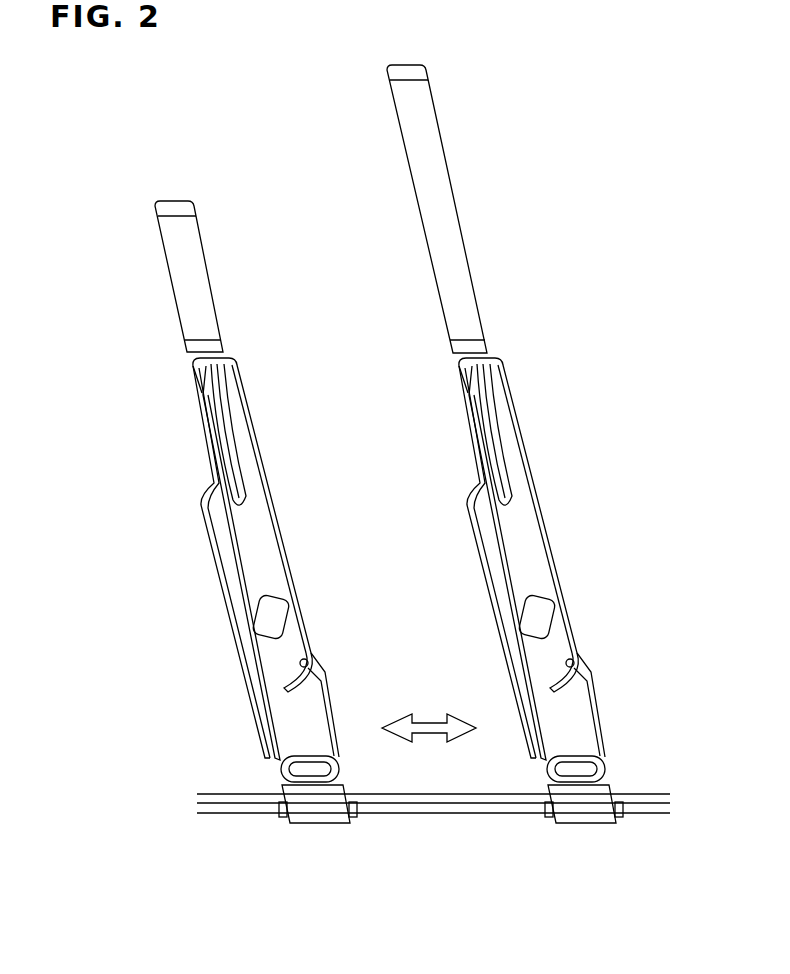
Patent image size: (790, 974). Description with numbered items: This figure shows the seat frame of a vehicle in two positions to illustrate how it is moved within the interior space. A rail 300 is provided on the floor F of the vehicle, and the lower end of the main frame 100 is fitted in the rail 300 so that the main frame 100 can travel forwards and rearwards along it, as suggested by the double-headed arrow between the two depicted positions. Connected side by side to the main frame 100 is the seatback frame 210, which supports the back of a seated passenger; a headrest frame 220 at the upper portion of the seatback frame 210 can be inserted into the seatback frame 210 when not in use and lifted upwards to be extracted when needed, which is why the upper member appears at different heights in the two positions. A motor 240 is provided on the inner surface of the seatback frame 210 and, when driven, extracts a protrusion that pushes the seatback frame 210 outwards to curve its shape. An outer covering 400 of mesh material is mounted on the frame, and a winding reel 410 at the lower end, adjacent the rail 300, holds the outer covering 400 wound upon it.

The main frame 100 is at (190, 282).
The outer covering 400 is at (512, 408).
The headrest frame 220 is at (493, 452).
The seatback frame 210 is at (537, 537).
The motor 240 is at (540, 616).
The winding reel 410 is at (550, 766).
The rail 300 is at (637, 807).
The floor F is at (653, 795).